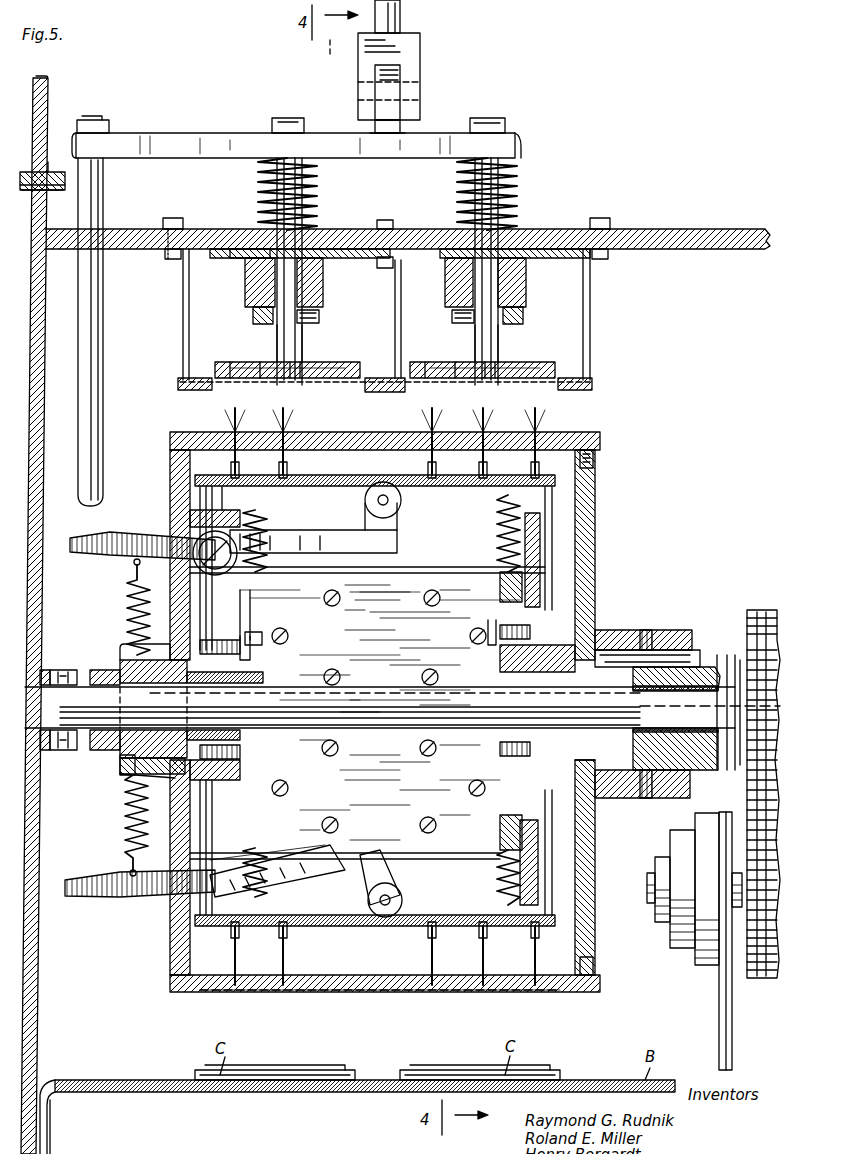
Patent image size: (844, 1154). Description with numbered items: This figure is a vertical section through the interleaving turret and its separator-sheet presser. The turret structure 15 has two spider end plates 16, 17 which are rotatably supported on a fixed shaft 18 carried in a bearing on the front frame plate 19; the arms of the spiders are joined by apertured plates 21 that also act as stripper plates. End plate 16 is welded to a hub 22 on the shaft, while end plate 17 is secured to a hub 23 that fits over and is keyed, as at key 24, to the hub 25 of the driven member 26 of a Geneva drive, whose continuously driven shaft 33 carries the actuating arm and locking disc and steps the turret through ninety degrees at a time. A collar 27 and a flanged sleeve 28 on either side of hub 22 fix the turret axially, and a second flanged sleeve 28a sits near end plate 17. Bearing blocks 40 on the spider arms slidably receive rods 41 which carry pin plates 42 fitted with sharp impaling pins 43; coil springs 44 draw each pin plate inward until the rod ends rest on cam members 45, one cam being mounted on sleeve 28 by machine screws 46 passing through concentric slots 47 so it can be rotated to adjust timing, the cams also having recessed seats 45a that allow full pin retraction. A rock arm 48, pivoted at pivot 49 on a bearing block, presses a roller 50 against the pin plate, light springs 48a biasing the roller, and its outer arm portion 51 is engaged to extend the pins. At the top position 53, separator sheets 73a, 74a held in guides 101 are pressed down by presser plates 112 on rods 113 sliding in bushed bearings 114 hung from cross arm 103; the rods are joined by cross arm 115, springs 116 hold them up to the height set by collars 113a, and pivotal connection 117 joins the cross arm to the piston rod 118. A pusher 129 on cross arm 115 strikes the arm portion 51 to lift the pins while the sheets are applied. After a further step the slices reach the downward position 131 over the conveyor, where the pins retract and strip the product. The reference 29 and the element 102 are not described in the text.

The turret structure 15 is at (605, 842).
The end plate 16 is at (170, 500).
The end plate 17 is at (595, 525).
The shaft 18 is at (360, 700).
The front frame plate 19 is at (45, 612).
The plates 21 is at (185, 432).
The hub 22 is at (120, 770).
The hub 23 is at (620, 630).
The key 24 is at (700, 650).
The hub 25 is at (707, 667).
The driven member 26 is at (760, 610).
The collar 27 is at (120, 752).
The flanged sleeve 28 is at (262, 660).
The flanged sleeve 28a is at (500, 660).
The sleeve 29 is at (262, 675).
The shaft 33 is at (740, 885).
The bearing blocks 40 is at (560, 495).
The rods 41 is at (200, 487).
The pin plates 42 is at (465, 486).
The impaling pins 43 is at (283, 425).
The coil springs 44 is at (270, 850).
The cam members 45 is at (228, 640).
The recessed seats 45a is at (500, 752).
The machine screws 46 is at (262, 648).
The slots 47 is at (262, 615).
The rock arm 48 is at (290, 528).
The light springs 48a is at (125, 630).
The pivot 49 is at (200, 535).
The roller 50 is at (400, 510).
The arm portion 51 is at (95, 555).
The position 53 is at (228, 425).
The separator sheet 73a is at (195, 1075).
The separator sheet 74a is at (590, 385).
The guides 101 is at (183, 370).
The housing 102 is at (183, 320).
The cross arm 103 is at (695, 230).
The presser plates 112 is at (318, 362).
The rods 113 is at (277, 345).
The collars 113a is at (253, 318).
The bushed bearings 114 is at (245, 286).
The cross arm 115 is at (425, 133).
The coil springs 116 is at (317, 190).
The pivotal connection 117 is at (420, 85).
The rod 118 is at (400, 20).
The pusher 129 is at (103, 380).
The position 131 is at (224, 1006).